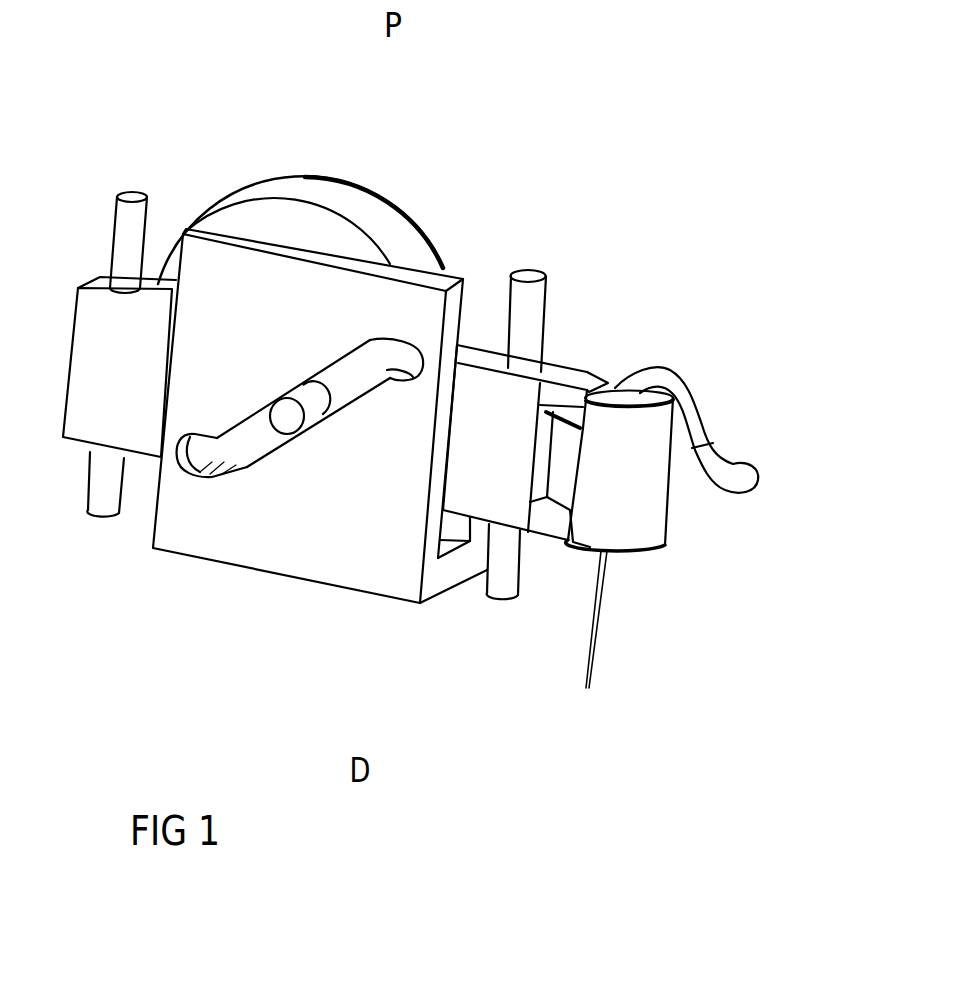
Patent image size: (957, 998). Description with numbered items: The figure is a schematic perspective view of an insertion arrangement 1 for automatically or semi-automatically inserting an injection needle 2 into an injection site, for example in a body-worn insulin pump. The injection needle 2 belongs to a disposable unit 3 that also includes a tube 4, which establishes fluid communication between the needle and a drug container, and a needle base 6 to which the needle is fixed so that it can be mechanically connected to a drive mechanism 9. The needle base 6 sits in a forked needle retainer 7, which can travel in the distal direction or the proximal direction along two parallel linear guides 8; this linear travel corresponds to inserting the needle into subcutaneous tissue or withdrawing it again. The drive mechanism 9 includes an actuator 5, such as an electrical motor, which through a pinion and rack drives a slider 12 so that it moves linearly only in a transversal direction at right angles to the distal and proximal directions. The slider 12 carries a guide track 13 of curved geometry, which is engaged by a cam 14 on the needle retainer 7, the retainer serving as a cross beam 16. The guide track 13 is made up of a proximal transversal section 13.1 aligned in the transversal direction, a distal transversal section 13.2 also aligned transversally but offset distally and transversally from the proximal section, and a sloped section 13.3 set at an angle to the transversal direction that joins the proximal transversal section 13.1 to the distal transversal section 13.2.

The insertion arrangement 1 is at (540, 150).
The injection needle 2 is at (600, 655).
The disposable unit 3 is at (654, 575).
The tube 4 is at (744, 484).
The actuator 5 is at (308, 188).
The needle base 6 is at (644, 518).
The needle retainer 7 is at (527, 392).
The cross beam 16 is at (527, 392).
The linear guides 8 is at (122, 232).
The drive mechanism 9 is at (441, 616).
The slider 12 is at (220, 257).
The guide track 13 is at (247, 474).
The proximal transversal section 13.1 is at (193, 472).
The distal transversal section 13.2 is at (403, 348).
The sloped section 13.3 is at (338, 412).
The cam 14 is at (287, 423).